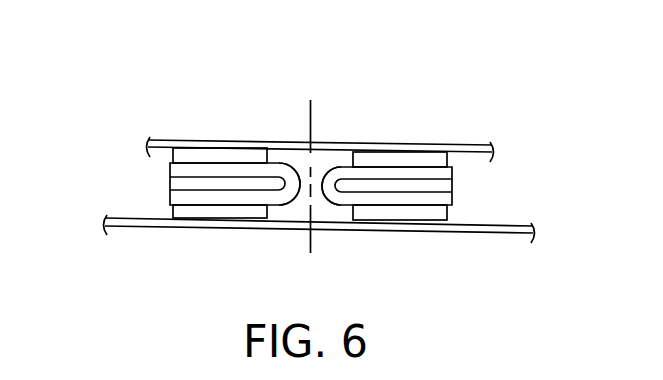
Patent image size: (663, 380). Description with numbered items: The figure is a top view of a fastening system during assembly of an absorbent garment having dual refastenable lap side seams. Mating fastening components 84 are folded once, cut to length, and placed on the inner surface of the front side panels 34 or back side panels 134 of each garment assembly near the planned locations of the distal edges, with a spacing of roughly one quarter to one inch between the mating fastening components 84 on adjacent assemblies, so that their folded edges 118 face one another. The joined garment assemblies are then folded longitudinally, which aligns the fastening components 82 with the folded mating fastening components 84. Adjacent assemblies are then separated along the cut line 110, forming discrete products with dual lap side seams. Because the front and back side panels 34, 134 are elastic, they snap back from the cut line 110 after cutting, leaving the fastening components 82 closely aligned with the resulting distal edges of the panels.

The front side panel 34 is at (452, 152).
The back side panel 134 is at (480, 233).
The mating fastening component 84 is at (170, 170).
The fastening component 82 is at (447, 160).
The folded edge 118 is at (297, 148).
The cut line 110 is at (300, 246).